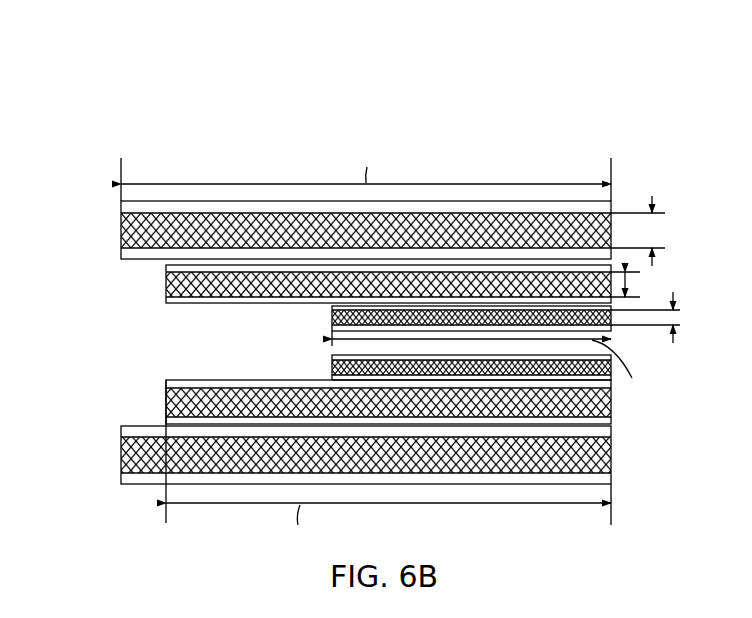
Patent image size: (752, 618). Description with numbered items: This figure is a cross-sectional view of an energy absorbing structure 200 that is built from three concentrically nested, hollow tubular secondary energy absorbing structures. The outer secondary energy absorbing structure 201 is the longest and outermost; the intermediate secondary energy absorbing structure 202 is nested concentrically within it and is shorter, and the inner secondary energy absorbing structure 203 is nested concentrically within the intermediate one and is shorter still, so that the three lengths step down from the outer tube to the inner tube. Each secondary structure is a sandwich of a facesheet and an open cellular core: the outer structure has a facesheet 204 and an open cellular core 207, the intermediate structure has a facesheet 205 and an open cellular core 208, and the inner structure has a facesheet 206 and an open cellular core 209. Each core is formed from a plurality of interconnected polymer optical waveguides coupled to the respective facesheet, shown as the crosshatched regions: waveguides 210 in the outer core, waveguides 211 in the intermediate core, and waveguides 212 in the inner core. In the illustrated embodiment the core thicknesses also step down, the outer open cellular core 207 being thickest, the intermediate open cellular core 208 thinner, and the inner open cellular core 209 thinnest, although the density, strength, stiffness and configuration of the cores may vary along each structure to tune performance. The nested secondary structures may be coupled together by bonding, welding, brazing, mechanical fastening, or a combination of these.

The energy absorbing structure 200 is at (592, 72).
The outer secondary energy absorbing structure 201 is at (118, 232).
The intermediate secondary energy absorbing structure 202 is at (164, 288).
The inner secondary energy absorbing structure 203 is at (330, 325).
The facesheet 204 is at (283, 258).
The facesheet 205 is at (468, 302).
The facesheet 206 is at (413, 275).
The open cellular core 207 is at (203, 232).
The open cellular core 208 is at (522, 277).
The open cellular core 209 is at (578, 315).
The interconnected polymer optical waveguides 210 is at (252, 228).
The interconnected polymer optical waveguides 211 is at (203, 285).
The interconnected polymer optical waveguides 212 is at (557, 367).